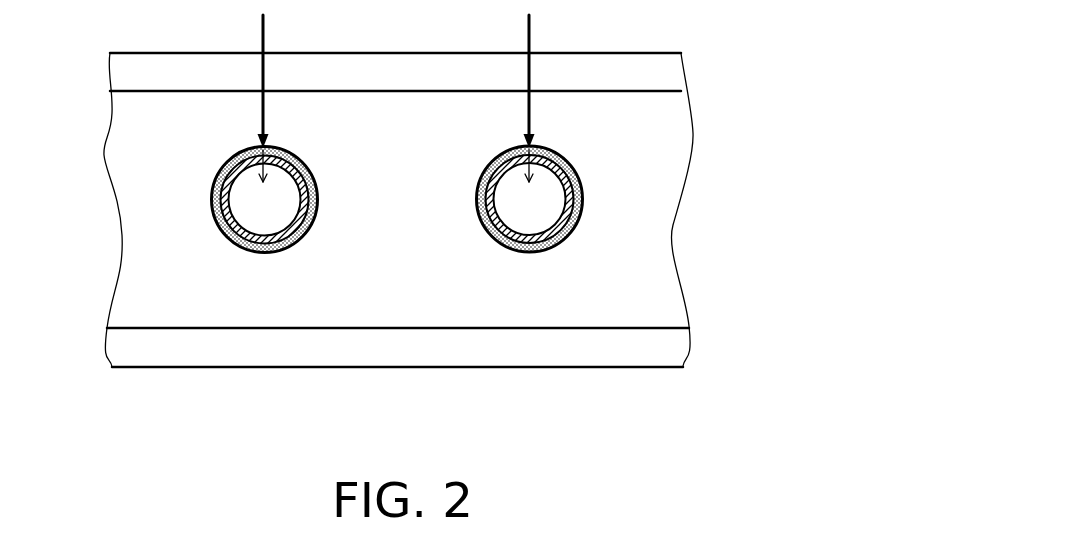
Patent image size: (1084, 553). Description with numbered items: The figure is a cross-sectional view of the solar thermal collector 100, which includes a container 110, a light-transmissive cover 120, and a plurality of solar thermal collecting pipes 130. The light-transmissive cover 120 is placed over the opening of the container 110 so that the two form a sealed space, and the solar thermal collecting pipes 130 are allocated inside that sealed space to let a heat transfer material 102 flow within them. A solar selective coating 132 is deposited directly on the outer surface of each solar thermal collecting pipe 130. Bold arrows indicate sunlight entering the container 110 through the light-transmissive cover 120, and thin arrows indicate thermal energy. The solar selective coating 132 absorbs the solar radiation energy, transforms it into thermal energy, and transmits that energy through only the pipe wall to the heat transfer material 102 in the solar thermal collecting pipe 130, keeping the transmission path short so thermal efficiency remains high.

The solar thermal collector 100 is at (738, 160).
The heat transfer material 102 is at (258, 207).
The container 110 is at (657, 346).
The light-transmissive cover 120 is at (645, 72).
The solar thermal collecting pipes 130 is at (222, 203).
The solar selective coating 132 is at (222, 166).